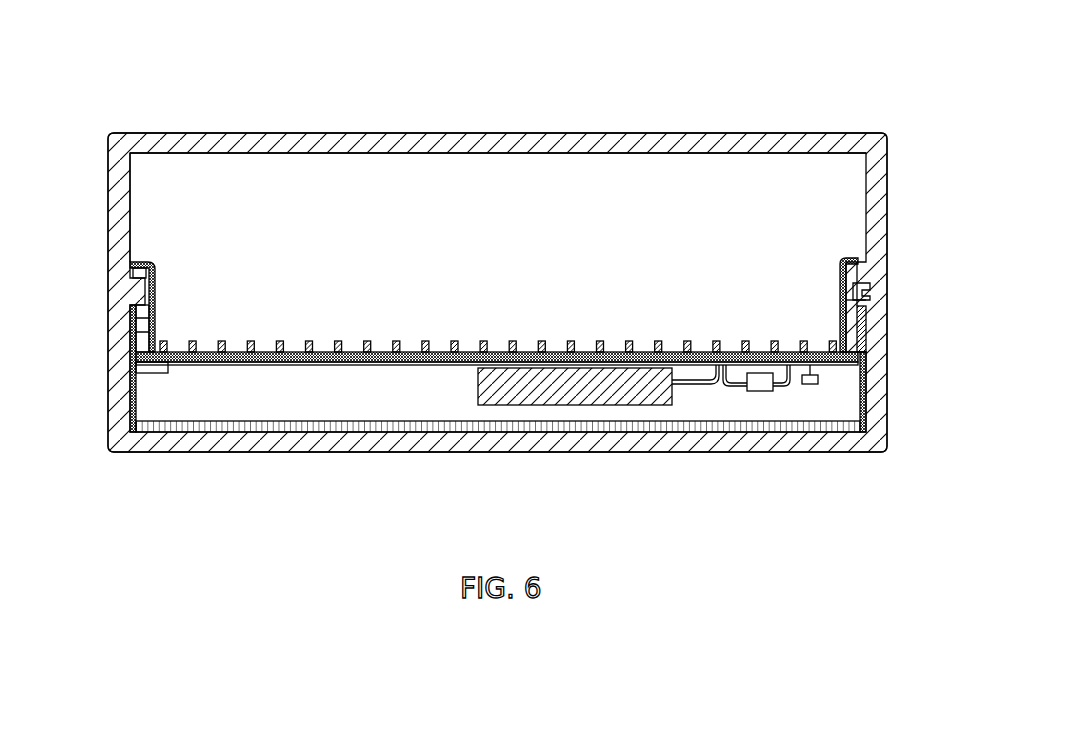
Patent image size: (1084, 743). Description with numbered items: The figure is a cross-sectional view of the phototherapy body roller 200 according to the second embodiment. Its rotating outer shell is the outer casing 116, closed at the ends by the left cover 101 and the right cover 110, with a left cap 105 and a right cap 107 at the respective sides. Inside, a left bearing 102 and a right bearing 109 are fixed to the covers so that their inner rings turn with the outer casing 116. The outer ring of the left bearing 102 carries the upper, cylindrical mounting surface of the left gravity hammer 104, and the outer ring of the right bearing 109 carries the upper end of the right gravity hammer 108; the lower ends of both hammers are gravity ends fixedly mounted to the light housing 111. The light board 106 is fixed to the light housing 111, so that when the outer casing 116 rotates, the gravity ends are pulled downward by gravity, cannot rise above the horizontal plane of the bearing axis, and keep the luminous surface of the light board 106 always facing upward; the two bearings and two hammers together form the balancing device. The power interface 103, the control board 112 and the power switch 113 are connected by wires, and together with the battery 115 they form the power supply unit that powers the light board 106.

The phototherapy body roller 200 is at (718, 90).
The left cover 101 is at (880, 187).
The outer casing 116 is at (830, 143).
The right cover 110 is at (115, 240).
The right cap 107 is at (143, 260).
The right bearing 109 is at (133, 277).
The right gravity hammer 108 is at (133, 331).
The light board 106 is at (168, 365).
The left cap 105 is at (850, 258).
The power interface 103 is at (872, 290).
The left bearing 102 is at (866, 305).
The left gravity hammer 104 is at (866, 343).
The control board 112 is at (818, 375).
The power switch 113 is at (760, 391).
The battery 115 is at (600, 389).
The light housing 111 is at (843, 425).